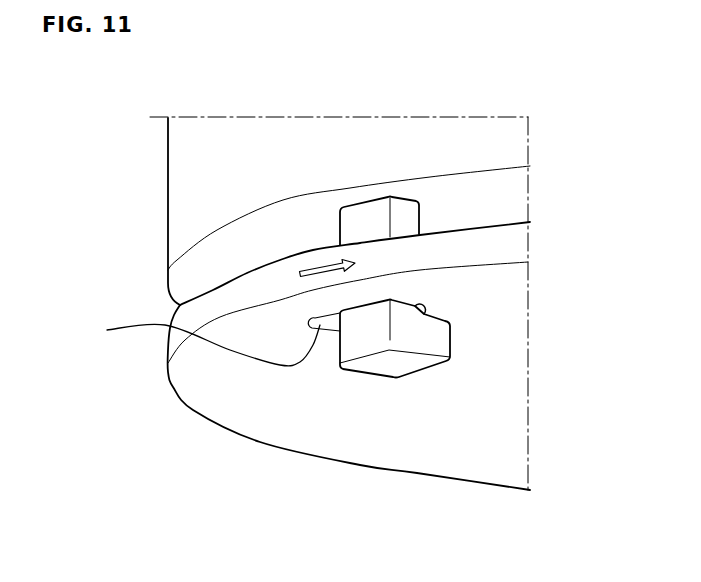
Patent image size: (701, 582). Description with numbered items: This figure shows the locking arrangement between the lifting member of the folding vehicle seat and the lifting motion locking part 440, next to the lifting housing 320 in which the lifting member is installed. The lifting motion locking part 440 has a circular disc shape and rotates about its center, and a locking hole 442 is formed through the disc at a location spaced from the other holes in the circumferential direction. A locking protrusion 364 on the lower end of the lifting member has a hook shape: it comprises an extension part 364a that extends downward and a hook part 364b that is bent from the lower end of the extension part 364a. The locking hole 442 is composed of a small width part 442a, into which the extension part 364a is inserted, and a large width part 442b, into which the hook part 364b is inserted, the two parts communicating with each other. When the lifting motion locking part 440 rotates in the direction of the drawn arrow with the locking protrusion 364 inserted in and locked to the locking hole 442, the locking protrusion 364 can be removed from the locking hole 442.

The lifting housing 320 is at (182, 171).
The lifting motion locking part 440 is at (260, 417).
The locking hole 442 is at (330, 322).
The small width part 442a is at (433, 316).
The large width part 442b is at (186, 343).
The locking protrusion 364 is at (474, 306).
The extension part 364a is at (367, 220).
The hook part 364b is at (474, 332).